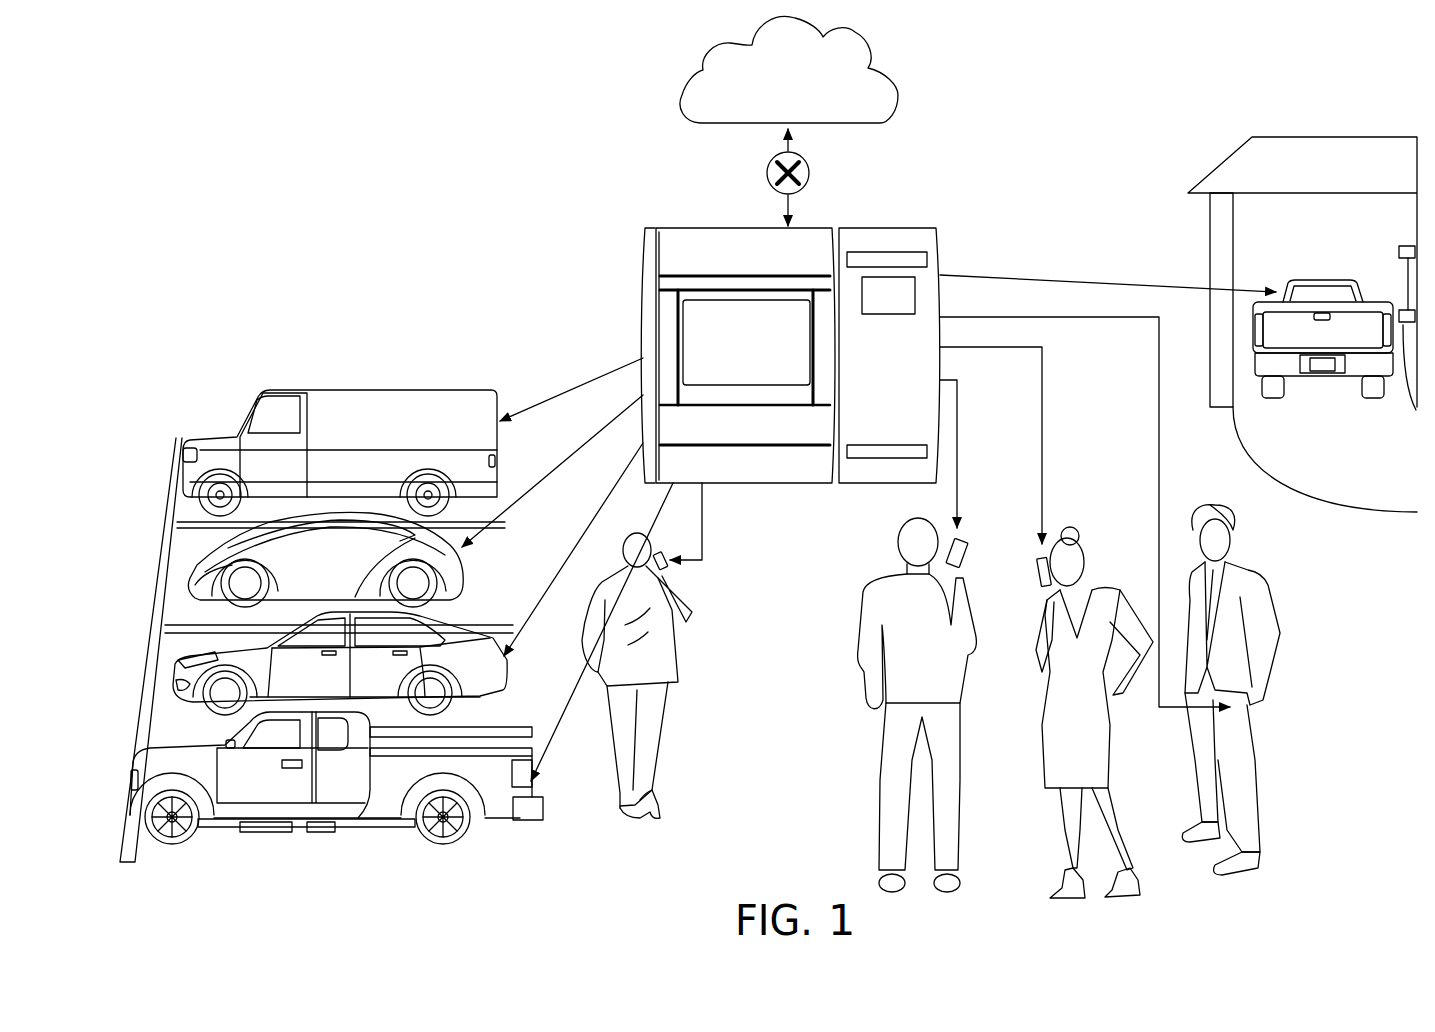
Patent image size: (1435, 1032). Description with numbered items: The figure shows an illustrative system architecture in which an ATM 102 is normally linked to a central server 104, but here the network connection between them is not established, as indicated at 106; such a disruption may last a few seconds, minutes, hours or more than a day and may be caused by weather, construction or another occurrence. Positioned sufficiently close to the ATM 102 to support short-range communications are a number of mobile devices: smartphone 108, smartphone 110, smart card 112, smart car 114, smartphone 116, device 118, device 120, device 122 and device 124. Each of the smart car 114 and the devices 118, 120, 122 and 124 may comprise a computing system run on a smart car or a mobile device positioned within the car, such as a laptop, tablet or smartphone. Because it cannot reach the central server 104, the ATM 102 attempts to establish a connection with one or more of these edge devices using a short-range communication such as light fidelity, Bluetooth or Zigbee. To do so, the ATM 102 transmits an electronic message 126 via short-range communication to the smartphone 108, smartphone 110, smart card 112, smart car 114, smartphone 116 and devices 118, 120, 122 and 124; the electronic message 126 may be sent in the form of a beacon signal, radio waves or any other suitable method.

The ATM 102 is at (708, 228).
The central server 104 is at (897, 96).
The network connection not established 106 is at (812, 174).
The smartphone 108 is at (972, 550).
The smartphone 110 is at (1044, 560).
The smart card 112 is at (1264, 700).
The smart car 114 is at (1308, 280).
The smartphone 116 is at (670, 563).
The device 118 is at (215, 746).
The device 120 is at (200, 656).
The device 122 is at (212, 560).
The device 124 is at (359, 384).
The electronic message 126 is at (595, 374).